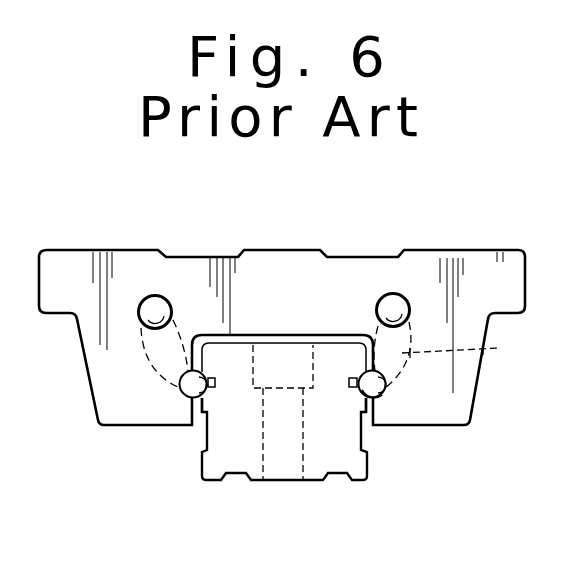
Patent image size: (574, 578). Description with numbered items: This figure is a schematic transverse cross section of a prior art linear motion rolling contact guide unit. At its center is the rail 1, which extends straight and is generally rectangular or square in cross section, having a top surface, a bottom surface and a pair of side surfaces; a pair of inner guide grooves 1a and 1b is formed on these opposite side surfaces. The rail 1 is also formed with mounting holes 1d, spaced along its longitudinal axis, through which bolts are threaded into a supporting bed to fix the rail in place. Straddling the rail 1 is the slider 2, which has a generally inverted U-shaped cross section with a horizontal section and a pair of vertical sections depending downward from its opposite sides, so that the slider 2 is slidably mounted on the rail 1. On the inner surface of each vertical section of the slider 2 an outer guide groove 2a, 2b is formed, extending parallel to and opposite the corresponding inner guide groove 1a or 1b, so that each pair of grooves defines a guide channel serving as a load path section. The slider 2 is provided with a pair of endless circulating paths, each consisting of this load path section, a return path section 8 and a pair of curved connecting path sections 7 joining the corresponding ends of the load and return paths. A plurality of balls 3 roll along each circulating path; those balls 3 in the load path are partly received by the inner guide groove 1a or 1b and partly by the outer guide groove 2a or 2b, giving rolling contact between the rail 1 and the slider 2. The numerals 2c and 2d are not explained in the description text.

The rail 1 is at (314, 454).
The inner guide groove 1a is at (207, 395).
The inner guide groove 1b is at (362, 396).
The mounting hole 1d is at (263, 430).
The slider 2 is at (284, 272).
The outer guide groove 2a is at (180, 384).
The outer guide groove 2b is at (386, 387).
The returning ball (left) 2c is at (139, 309).
The returning ball (right) 2d is at (407, 300).
The ball 3 is at (376, 396).
The curved connecting path section 7 is at (459, 349).
The return path section 8 is at (377, 304).